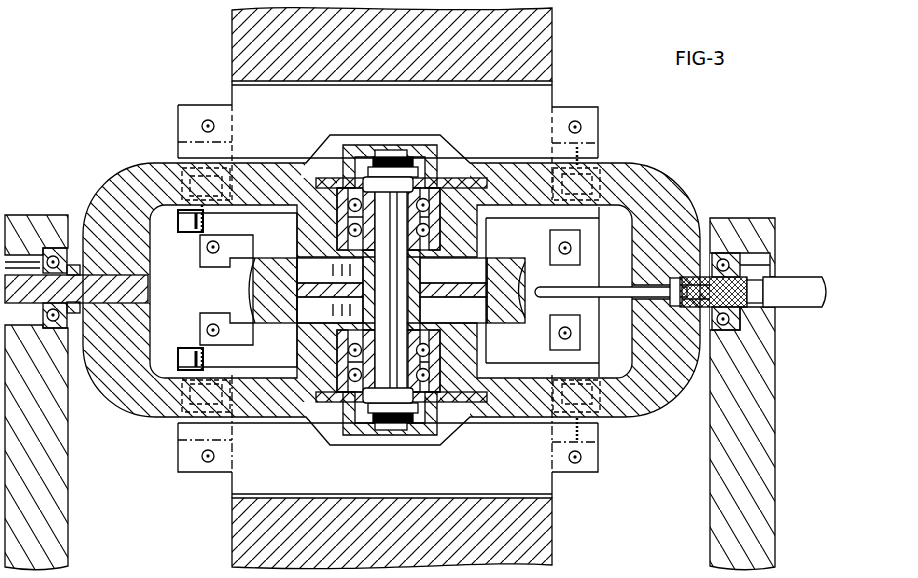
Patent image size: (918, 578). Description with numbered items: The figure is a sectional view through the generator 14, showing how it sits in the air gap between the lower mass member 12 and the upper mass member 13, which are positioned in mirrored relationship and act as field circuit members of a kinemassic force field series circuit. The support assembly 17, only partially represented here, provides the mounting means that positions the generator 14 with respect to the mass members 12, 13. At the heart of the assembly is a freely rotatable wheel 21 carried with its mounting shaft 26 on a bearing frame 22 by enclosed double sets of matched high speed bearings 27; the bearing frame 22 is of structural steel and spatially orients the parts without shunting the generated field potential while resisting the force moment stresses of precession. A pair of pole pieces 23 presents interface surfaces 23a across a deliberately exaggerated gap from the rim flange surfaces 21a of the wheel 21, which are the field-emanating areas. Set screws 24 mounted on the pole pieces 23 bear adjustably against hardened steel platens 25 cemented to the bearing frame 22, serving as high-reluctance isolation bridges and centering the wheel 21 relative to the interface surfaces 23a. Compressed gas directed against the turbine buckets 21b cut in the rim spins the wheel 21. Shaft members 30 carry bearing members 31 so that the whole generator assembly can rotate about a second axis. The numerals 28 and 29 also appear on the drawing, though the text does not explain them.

The lower mass member 12 is at (377, 537).
The upper mass member 13 is at (538, 46).
The generator 14 is at (412, 287).
The support assembly 17 is at (60, 506).
The wheel 21 is at (390, 290).
The rim flange surfaces 21a is at (253, 277).
The turbine buckets 21b is at (257, 295).
The bearing frame 22 is at (140, 181).
The pole pieces 23 is at (245, 102).
The interface surfaces 23a is at (258, 265).
The set screws 24 is at (180, 214).
The steel platens 25 is at (180, 201).
The mounting shaft 26 is at (345, 394).
The high speed bearings 27 is at (453, 364).
The output shaft 28 is at (782, 278).
The drive rod 29 is at (597, 297).
The shaft members 30 is at (108, 300).
The bearing members 31 is at (55, 232).